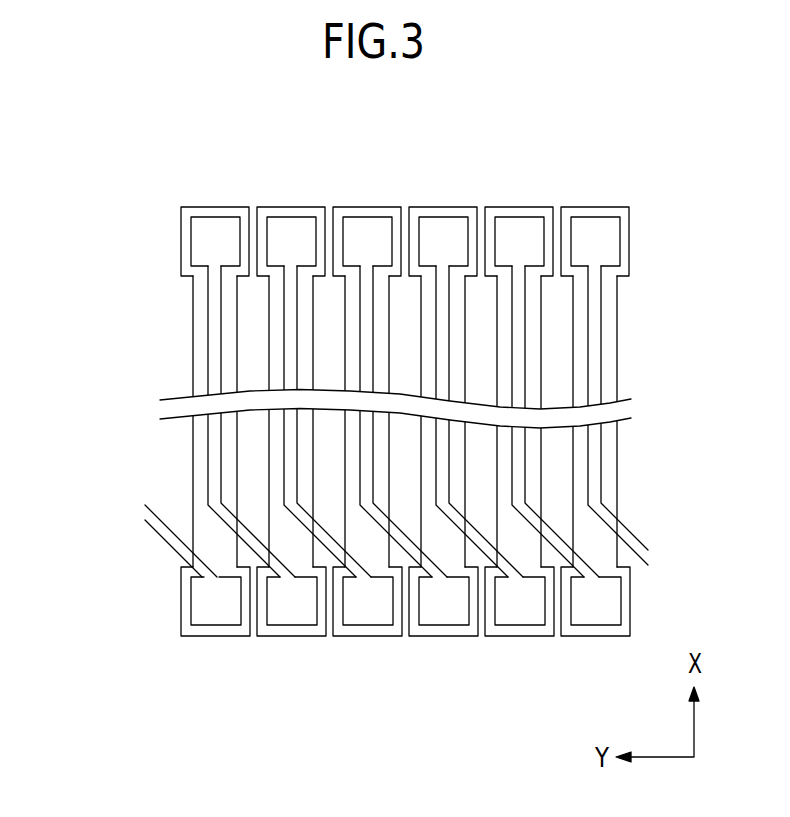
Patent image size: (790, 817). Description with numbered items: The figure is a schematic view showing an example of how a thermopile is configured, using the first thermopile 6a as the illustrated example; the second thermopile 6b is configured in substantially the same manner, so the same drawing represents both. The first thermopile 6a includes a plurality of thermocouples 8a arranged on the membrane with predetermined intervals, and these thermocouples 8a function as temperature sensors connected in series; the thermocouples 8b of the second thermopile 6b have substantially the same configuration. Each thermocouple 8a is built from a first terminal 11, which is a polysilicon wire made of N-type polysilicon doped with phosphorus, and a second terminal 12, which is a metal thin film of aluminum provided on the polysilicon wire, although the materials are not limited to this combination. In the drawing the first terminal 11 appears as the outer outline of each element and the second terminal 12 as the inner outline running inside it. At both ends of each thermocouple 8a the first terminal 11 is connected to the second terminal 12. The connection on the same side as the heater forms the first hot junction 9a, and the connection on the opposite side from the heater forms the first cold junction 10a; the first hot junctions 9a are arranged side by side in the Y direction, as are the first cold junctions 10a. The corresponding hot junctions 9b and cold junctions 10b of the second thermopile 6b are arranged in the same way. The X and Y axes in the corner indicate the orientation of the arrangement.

The first thermopile 6a is at (617, 185).
The second thermopile 6b is at (661, 125).
The thermocouple 8a is at (214, 206).
The thermocouple 8b is at (359, 389).
The first hot junction 9a is at (172, 208).
The hot junction 9b is at (362, 241).
The first cold junction 10a is at (172, 567).
The cold junction 10b is at (359, 601).
The first terminal 11 is at (202, 358).
The second terminal 12 is at (215, 313).